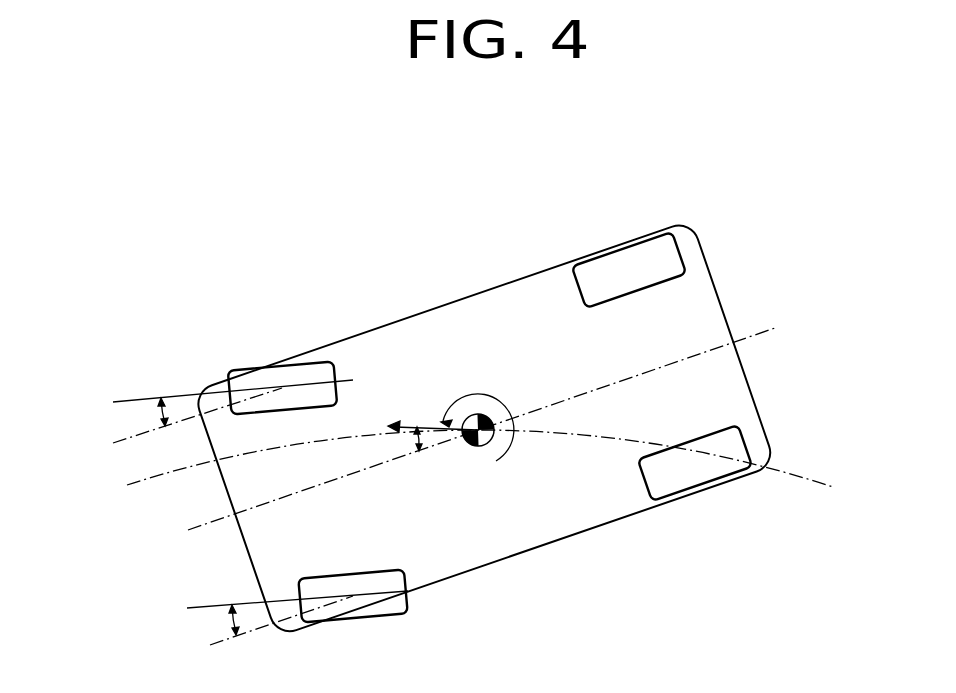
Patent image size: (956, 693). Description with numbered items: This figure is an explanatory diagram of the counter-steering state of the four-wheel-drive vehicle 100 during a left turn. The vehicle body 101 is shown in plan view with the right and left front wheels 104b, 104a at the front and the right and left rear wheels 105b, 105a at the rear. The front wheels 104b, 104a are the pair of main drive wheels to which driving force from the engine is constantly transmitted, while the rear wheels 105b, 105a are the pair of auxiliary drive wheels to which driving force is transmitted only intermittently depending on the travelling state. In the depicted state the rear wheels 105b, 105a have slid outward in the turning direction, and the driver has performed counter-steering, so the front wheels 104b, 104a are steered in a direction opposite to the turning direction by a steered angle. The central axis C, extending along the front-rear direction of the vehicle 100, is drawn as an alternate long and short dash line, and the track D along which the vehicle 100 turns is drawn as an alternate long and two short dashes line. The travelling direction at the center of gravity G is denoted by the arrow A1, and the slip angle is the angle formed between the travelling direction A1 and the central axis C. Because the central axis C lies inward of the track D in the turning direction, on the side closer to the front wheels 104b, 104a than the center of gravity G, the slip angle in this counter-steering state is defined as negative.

The four-wheel-drive vehicle 100 is at (398, 266).
The vehicle body 101 is at (722, 307).
The left front wheel 104a is at (372, 622).
The right front wheel 104b is at (243, 364).
The left rear wheel 105a is at (738, 435).
The right rear wheel 105b is at (673, 228).
The center of gravity G is at (498, 463).
The central axis C is at (766, 330).
The track D is at (786, 470).
The travelling direction A1 is at (407, 420).